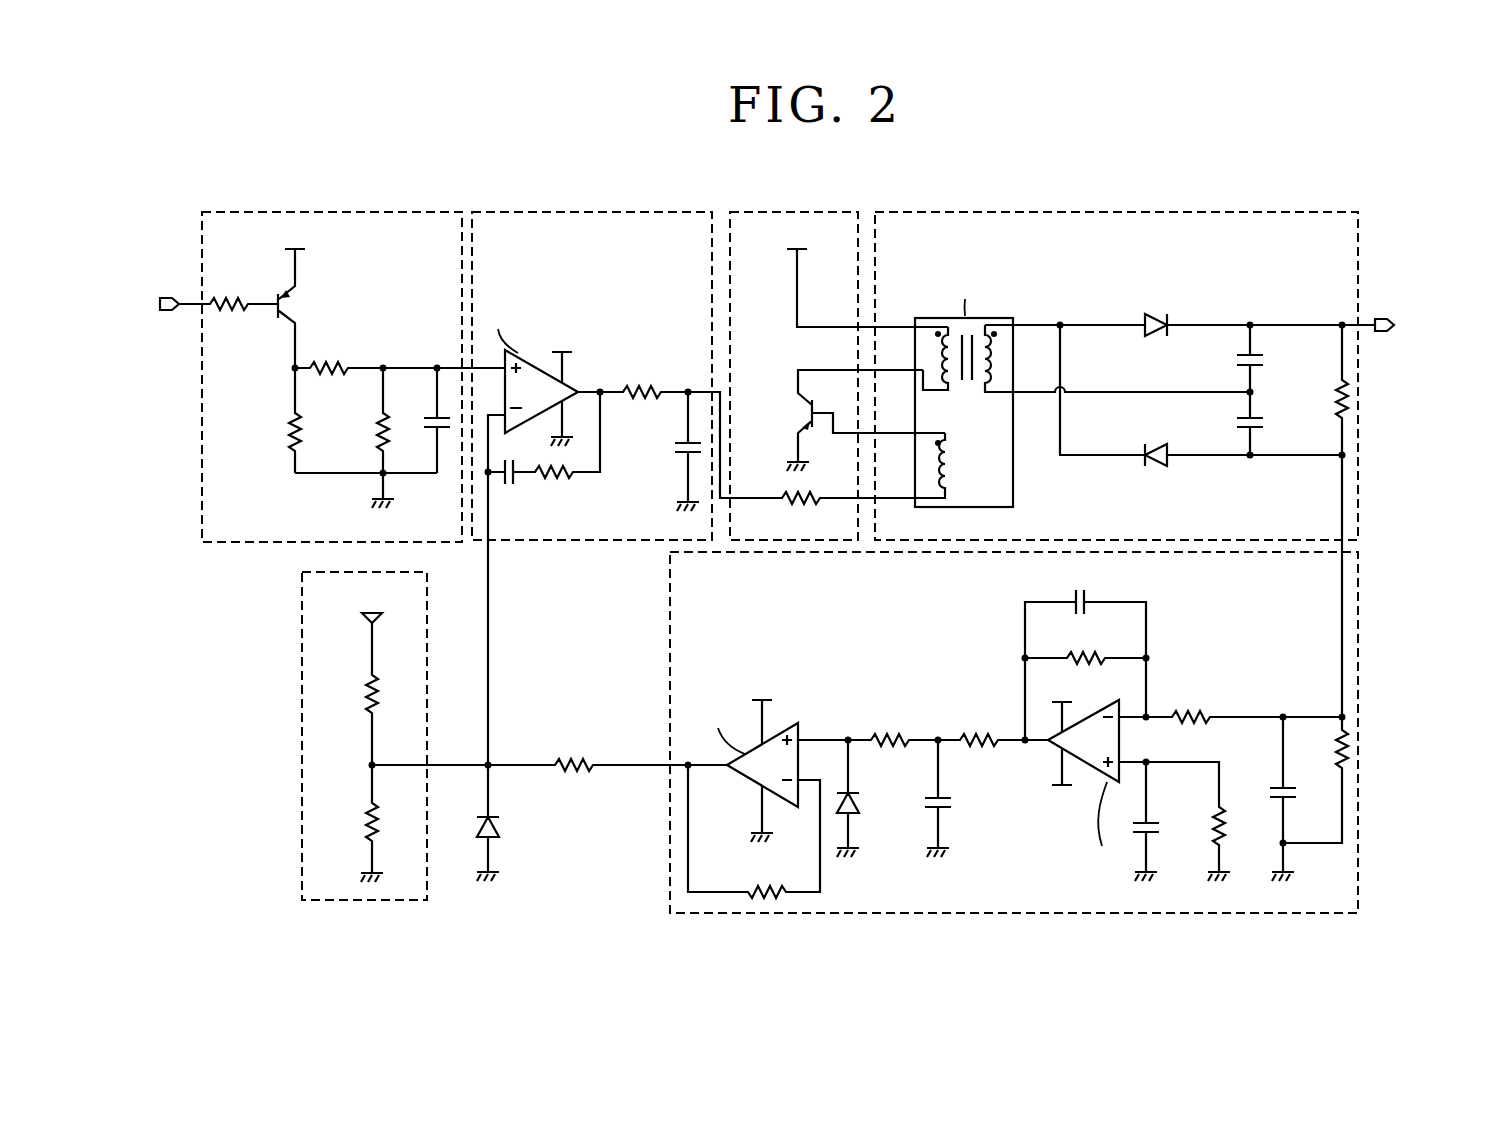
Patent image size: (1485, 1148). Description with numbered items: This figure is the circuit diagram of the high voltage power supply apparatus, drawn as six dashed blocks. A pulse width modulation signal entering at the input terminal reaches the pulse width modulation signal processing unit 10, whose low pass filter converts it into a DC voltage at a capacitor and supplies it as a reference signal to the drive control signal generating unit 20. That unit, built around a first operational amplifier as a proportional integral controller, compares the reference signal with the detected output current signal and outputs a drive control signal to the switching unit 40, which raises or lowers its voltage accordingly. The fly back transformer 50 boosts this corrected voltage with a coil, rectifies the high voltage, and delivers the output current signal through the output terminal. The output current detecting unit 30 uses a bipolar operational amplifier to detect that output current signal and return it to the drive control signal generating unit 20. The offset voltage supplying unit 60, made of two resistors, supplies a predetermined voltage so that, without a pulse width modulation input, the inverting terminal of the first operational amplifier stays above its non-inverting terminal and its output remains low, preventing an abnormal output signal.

The pulse width modulation signal processing unit 10 is at (323, 211).
The drive control signal generating unit 20 is at (589, 211).
The output current detecting unit 30 is at (669, 848).
The switching unit 40 is at (794, 211).
The fly back transformer 50 is at (1144, 211).
The offset voltage supplying unit 60 is at (301, 733).